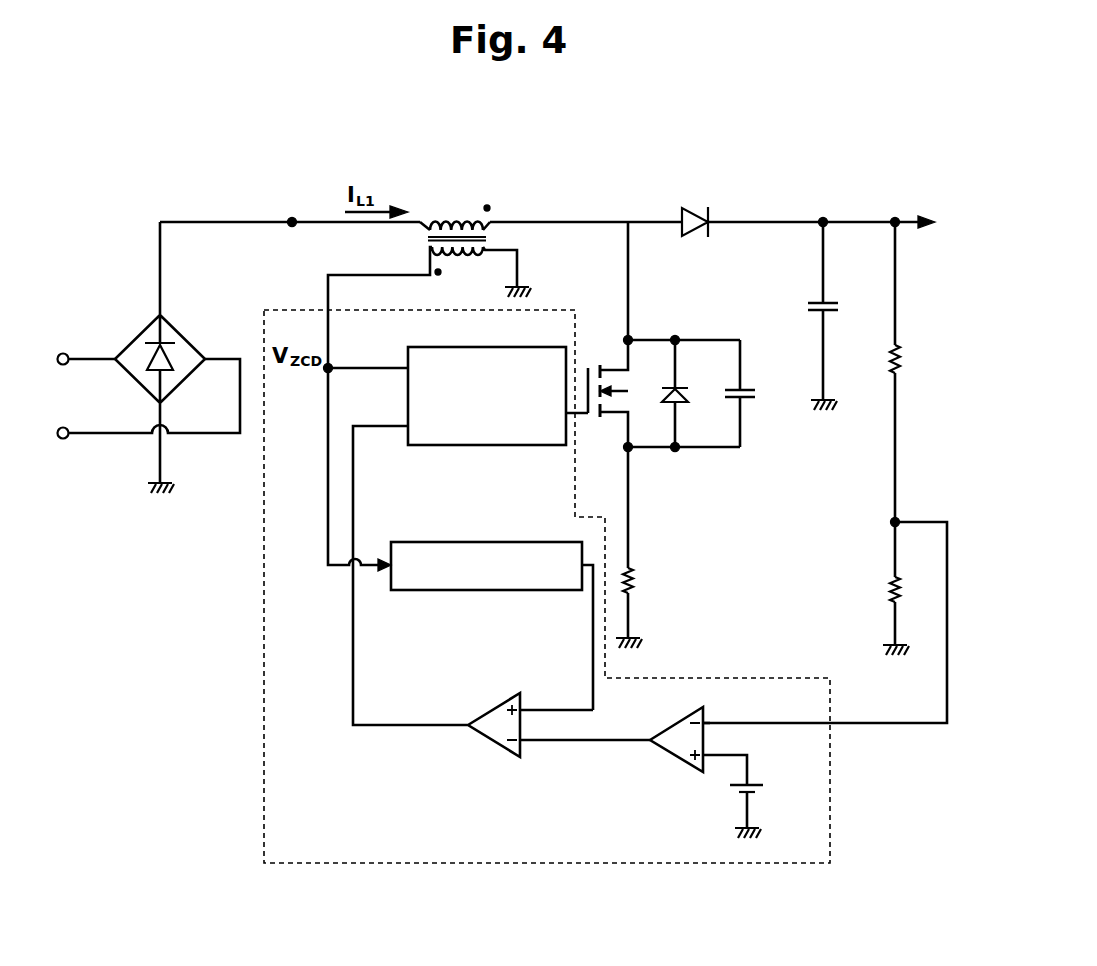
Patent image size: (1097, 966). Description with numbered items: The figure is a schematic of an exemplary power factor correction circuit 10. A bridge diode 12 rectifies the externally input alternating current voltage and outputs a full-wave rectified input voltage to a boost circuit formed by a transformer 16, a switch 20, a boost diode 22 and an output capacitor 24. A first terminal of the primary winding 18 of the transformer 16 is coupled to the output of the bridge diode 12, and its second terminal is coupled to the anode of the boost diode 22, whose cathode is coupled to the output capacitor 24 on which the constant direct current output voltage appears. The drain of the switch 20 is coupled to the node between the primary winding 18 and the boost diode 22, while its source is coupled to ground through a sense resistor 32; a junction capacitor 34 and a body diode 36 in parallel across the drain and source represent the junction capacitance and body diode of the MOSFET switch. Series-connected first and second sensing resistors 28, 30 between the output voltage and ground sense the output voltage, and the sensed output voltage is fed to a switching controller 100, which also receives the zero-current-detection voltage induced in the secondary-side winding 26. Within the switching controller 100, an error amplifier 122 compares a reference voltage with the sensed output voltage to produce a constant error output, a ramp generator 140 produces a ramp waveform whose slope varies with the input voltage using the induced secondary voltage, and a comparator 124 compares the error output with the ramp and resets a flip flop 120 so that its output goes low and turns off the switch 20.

The power factor correction circuit 10 is at (824, 150).
The bridge diode BD 12 is at (148, 328).
The transformer 16 is at (428, 226).
The primary winding L1 18 is at (490, 200).
The switch Qsw 20 is at (590, 365).
The diode D1 22 is at (690, 234).
The capacitor C1 24 is at (808, 305).
The secondary-side winding L2 26 is at (428, 254).
The resistor R3 28 is at (890, 356).
The resistor R4 30 is at (890, 590).
The resistor Rsense 32 is at (638, 590).
The capacitor Coss 34 is at (750, 400).
The diode Db 36 is at (680, 388).
The switching controller 100 is at (760, 678).
The flip flop 120 is at (446, 447).
The amplifier Amp1 122 is at (678, 778).
The comparator Amp3 124 is at (492, 766).
The ramp generator 140 is at (488, 542).